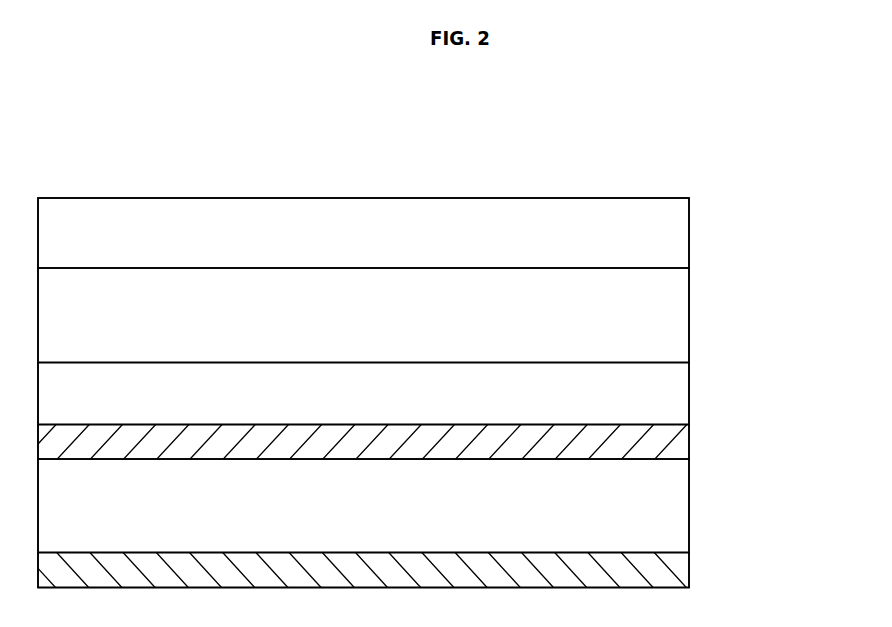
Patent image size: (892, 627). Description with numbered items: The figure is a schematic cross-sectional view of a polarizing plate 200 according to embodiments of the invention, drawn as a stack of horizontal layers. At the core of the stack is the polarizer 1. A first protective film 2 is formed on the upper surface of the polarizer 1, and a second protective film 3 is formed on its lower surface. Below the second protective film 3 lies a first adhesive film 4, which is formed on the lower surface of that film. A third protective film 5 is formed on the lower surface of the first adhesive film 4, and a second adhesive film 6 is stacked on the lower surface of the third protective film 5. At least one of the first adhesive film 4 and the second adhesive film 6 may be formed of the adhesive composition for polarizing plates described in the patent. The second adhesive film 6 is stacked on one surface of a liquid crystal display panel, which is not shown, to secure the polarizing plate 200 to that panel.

The polarizing plate 200 is at (622, 181).
The polarizer 1 is at (673, 313).
The first protective film 2 is at (673, 227).
The second protective film 3 is at (673, 387).
The first adhesive film 4 is at (673, 447).
The third protective film 5 is at (673, 503).
The second adhesive film 6 is at (673, 567).